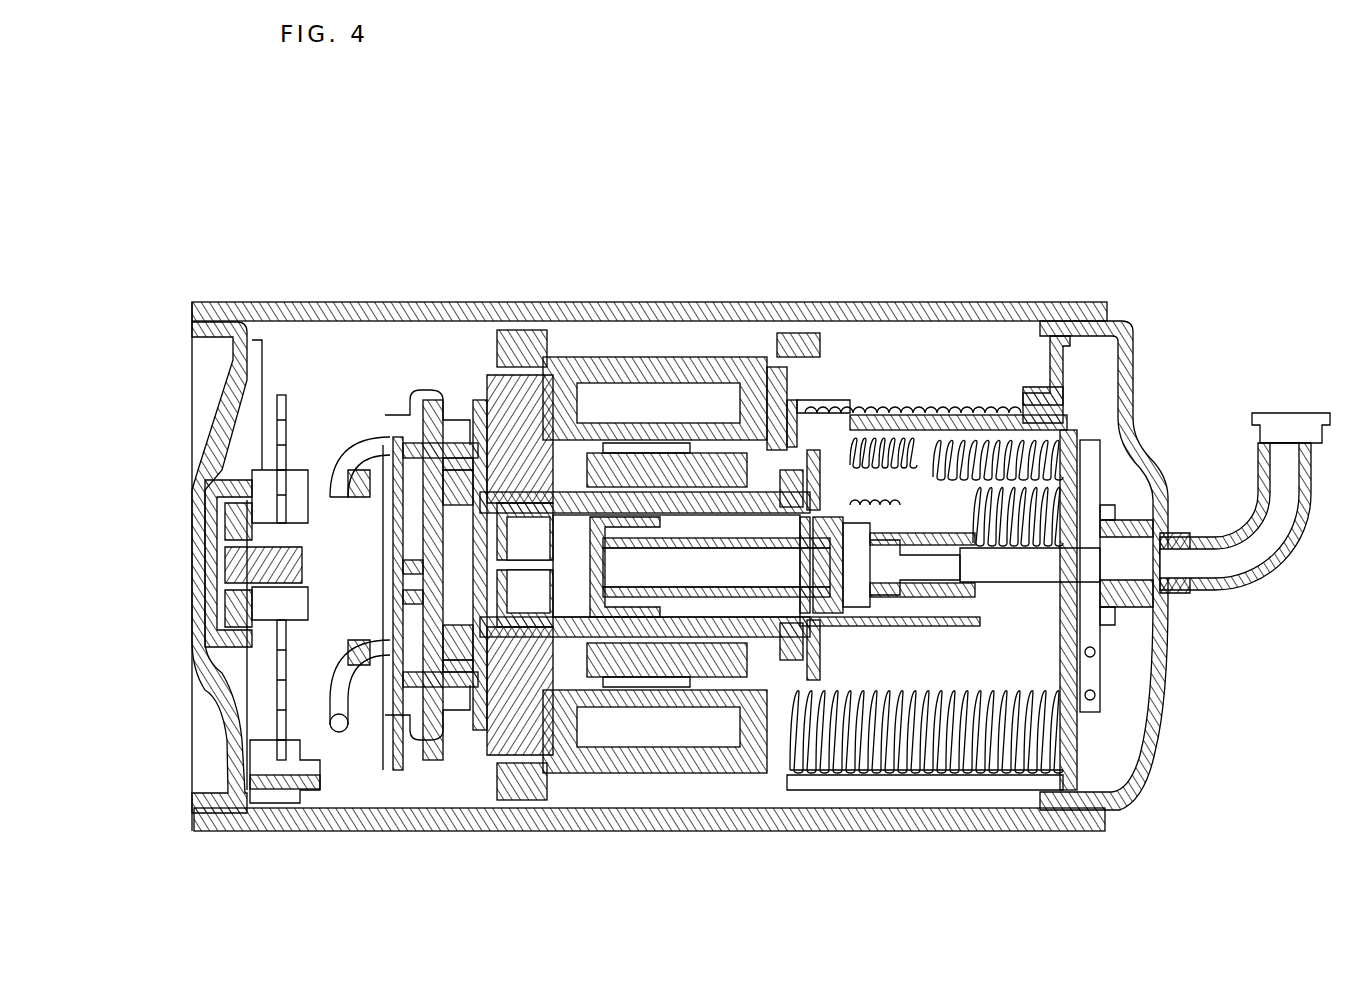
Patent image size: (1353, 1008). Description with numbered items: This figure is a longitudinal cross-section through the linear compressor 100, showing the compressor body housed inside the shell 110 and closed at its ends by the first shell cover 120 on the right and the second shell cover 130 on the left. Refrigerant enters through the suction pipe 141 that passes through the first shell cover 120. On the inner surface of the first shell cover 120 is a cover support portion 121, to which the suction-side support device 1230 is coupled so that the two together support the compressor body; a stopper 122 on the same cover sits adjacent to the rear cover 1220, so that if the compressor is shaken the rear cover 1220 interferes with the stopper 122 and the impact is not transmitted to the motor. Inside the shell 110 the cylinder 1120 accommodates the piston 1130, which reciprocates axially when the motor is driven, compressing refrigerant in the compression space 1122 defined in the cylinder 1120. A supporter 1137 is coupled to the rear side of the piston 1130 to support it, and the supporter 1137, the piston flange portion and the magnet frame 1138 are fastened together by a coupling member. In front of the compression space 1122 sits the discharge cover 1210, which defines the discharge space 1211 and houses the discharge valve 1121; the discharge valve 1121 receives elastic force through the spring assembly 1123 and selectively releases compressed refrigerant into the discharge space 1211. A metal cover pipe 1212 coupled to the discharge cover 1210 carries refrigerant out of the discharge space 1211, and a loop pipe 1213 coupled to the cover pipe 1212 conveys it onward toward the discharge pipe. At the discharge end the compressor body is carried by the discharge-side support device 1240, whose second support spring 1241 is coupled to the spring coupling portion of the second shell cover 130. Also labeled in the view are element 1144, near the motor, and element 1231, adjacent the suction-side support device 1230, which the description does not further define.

The linear compressor 100 is at (676, 192).
The shell 110 is at (943, 310).
The first shell cover 120 is at (1140, 340).
The cover support portion 121 is at (1135, 516).
The stopper 122 is at (1075, 325).
The second shell cover 130 is at (218, 428).
The suction pipe 141 is at (1280, 560).
The cylinder 1120 is at (610, 640).
The discharge valve 1121 is at (483, 603).
The compression space 1122 is at (490, 520).
The spring assembly 1123 is at (455, 665).
The piston 1130 is at (700, 620).
The supporter 1137 is at (875, 450).
The magnet frame 1138 is at (785, 447).
The stator cover 1144 is at (797, 440).
The discharge cover 1210 is at (403, 430).
The discharge space 1211 is at (417, 585).
The cover pipe 1212 is at (350, 440).
The loop pipe 1213 is at (340, 703).
The rear cover 1220 is at (985, 423).
The suction-side support device 1230 is at (1126, 433).
The discharge cover flange 1231 is at (1150, 572).
The discharge-side support device 1240 is at (263, 348).
The second support spring 1241 is at (283, 395).